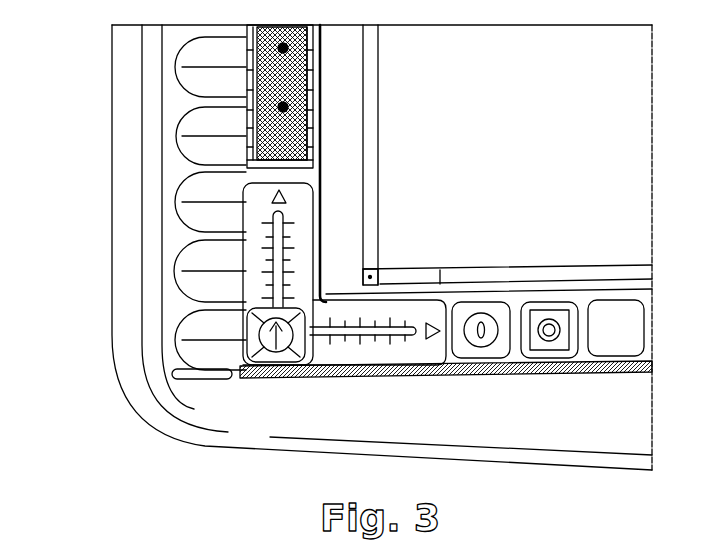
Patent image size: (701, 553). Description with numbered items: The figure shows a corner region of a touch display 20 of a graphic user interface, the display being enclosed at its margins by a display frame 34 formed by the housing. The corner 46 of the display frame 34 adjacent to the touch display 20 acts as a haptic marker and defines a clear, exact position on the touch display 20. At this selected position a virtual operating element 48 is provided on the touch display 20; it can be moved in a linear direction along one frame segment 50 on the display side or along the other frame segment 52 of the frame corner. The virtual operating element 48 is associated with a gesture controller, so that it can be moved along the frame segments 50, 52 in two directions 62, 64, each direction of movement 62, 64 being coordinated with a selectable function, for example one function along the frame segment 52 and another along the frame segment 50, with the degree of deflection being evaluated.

The touch display 20 is at (536, 185).
The display frame 34 is at (122, 229).
The corner 46 is at (242, 380).
The virtual operating element 48 is at (326, 314).
The frame segment 50 is at (300, 188).
The frame segment 52 is at (393, 379).
The direction of movement 62 is at (433, 340).
The direction of movement 64 is at (300, 204).